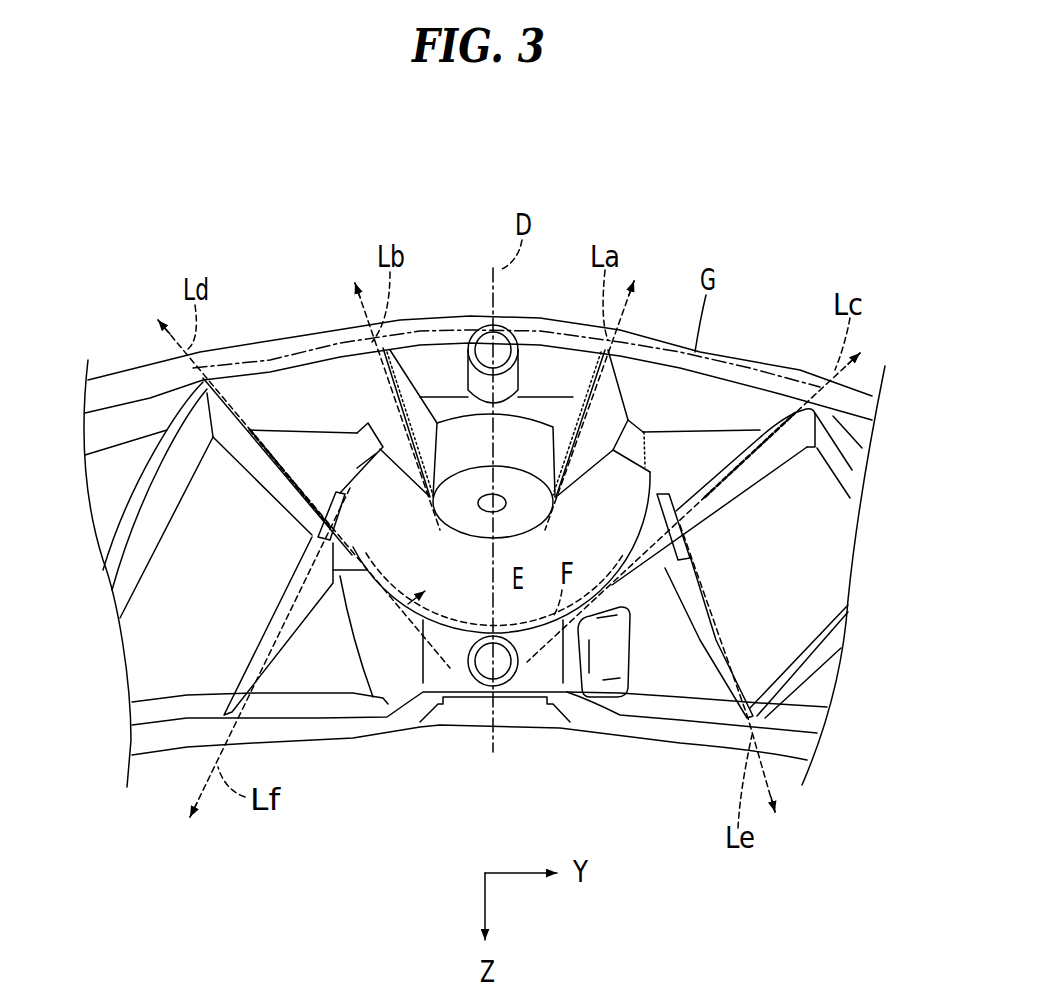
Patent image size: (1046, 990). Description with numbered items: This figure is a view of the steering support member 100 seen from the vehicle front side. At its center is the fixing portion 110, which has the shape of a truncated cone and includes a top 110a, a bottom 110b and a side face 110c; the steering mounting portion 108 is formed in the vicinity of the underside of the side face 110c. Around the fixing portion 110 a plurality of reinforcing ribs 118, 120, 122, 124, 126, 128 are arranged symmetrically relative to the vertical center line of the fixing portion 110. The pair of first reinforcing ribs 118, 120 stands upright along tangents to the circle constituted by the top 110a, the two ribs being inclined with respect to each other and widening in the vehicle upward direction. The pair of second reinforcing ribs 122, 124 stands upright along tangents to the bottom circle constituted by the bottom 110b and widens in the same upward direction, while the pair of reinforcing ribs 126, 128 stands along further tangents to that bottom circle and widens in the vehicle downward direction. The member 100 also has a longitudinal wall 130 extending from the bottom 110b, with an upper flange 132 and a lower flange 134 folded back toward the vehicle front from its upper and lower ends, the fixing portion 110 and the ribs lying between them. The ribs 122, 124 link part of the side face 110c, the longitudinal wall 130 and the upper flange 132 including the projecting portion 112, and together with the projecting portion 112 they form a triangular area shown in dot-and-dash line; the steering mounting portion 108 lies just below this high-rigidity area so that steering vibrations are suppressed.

The steering support member 100 is at (449, 198).
The steering mounting portion 108 is at (443, 673).
The fixing portion 110 is at (407, 600).
The top 110a is at (467, 518).
The bottom 110b is at (558, 615).
The side face 110c is at (620, 500).
The projecting portion 112 is at (281, 348).
The reinforcing rib 118 is at (623, 403).
The reinforcing rib 120 is at (387, 403).
The reinforcing rib 122 is at (750, 470).
The reinforcing rib 124 is at (283, 487).
The reinforcing rib 126 is at (687, 603).
The reinforcing rib 128 is at (290, 630).
The longitudinal wall 130 is at (807, 560).
The upper flange 132 is at (735, 403).
The lower flange 134 is at (675, 732).